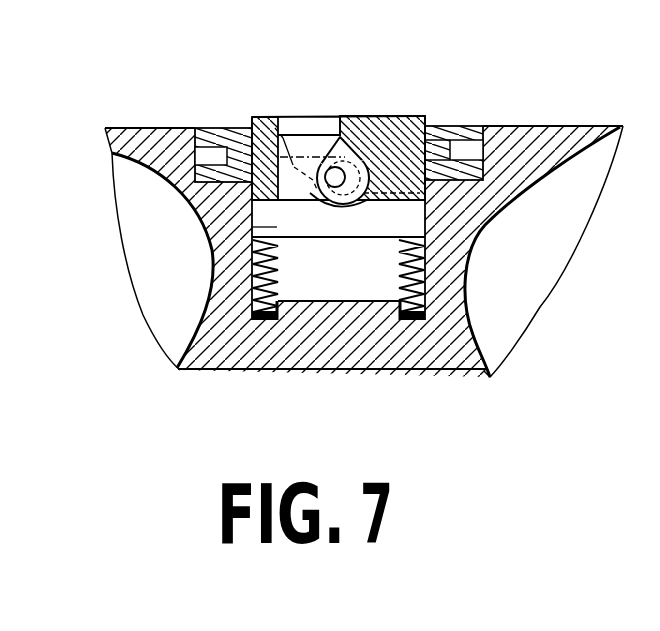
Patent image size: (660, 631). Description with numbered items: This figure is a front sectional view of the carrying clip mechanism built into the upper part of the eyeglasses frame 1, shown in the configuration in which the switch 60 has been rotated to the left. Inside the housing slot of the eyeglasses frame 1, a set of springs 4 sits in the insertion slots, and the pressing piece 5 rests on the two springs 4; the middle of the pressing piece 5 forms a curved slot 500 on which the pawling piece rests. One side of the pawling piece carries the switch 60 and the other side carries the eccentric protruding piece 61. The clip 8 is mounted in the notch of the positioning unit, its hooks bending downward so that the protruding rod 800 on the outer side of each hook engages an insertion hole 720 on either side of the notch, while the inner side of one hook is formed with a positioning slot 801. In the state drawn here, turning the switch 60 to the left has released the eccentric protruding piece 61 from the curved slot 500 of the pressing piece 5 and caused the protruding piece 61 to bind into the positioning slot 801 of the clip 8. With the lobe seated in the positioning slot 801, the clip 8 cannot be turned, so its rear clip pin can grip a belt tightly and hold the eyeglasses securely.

The eyeglasses frame 1 is at (563, 130).
The spring 4 is at (412, 320).
The pressing piece 5 is at (220, 237).
The clip 8 is at (339, 116).
The switch 60 is at (274, 127).
The eccentric protruding piece 61 is at (338, 166).
The curved slot 500 is at (336, 200).
The insertion hole 720 is at (378, 112).
The protruding rod 800 is at (449, 130).
The positioning slot 801 is at (365, 128).